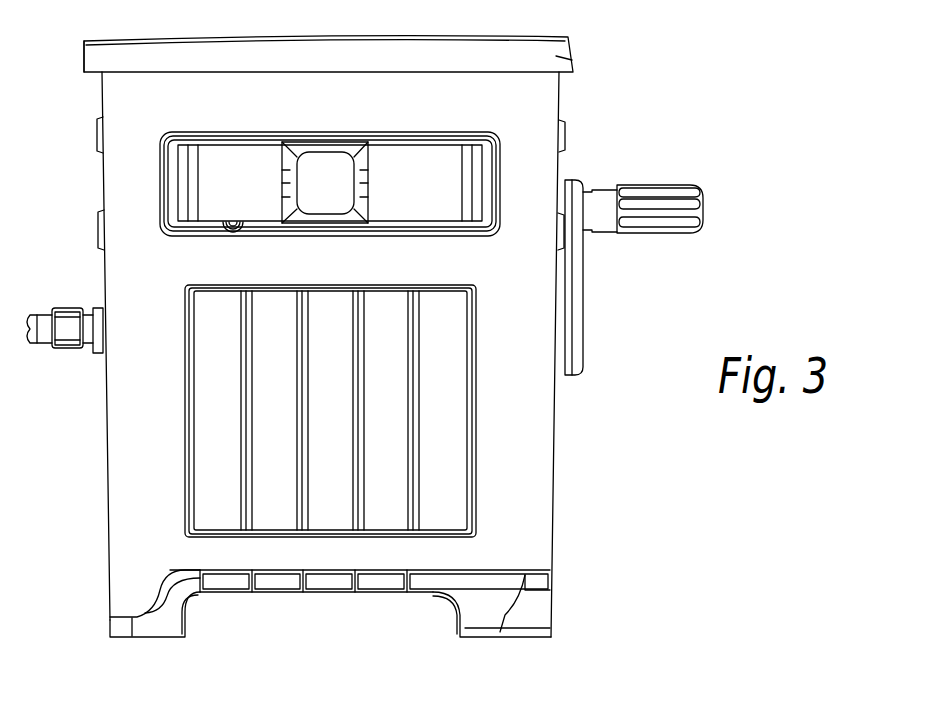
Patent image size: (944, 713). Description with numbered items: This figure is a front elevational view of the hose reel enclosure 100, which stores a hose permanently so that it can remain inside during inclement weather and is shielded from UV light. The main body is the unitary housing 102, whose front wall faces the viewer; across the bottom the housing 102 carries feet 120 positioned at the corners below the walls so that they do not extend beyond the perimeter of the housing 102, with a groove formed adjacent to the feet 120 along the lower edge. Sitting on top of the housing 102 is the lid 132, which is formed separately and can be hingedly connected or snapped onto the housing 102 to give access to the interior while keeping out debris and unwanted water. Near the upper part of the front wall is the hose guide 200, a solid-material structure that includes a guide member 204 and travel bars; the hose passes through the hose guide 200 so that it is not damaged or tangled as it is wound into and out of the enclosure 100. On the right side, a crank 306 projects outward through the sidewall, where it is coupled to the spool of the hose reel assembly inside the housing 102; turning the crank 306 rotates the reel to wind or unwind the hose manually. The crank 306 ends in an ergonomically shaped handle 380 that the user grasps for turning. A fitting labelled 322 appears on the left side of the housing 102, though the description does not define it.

The hose reel enclosure 100 is at (683, 86).
The unitary housing 102 is at (537, 493).
The feet 120 is at (124, 624).
The lid 132 is at (558, 57).
The hose guide 200 is at (290, 172).
The guide member 204 is at (290, 185).
The crank 306 is at (577, 238).
The inlet connector 322 is at (88, 342).
The handle 380 is at (672, 205).